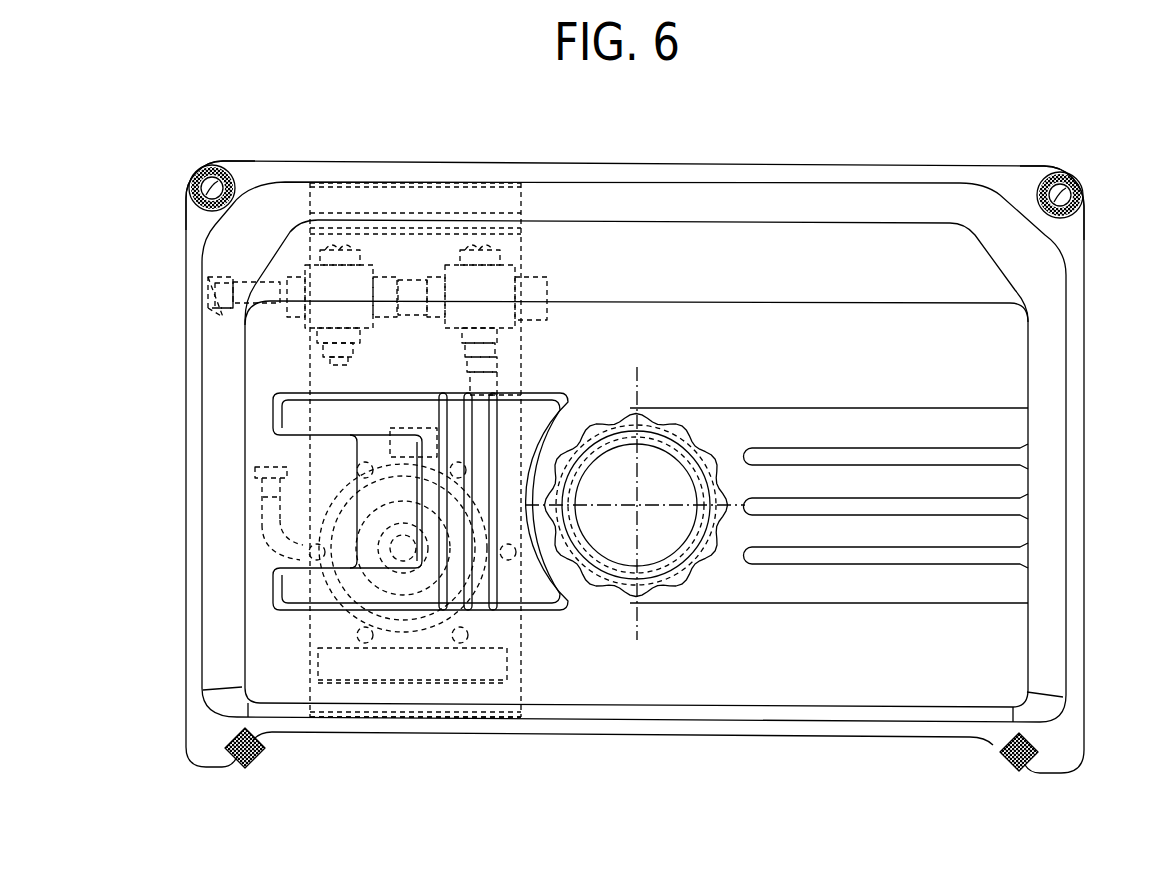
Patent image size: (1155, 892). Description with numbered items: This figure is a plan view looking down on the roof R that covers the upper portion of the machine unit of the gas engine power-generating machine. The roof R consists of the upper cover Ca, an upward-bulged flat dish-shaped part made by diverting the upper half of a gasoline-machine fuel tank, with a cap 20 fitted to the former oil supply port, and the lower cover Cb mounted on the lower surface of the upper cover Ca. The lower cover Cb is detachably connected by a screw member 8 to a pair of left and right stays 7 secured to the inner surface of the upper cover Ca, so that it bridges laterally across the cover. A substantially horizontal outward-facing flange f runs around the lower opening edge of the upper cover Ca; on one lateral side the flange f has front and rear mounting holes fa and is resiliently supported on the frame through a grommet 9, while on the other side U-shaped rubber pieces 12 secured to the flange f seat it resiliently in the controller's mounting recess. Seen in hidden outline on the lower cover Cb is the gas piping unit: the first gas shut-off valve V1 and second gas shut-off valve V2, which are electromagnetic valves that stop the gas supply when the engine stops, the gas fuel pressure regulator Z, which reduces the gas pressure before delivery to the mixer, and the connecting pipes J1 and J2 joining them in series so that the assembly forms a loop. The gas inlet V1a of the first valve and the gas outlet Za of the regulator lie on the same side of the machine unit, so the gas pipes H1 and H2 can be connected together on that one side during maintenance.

The flange f is at (633, 163).
The mounting holes fa is at (200, 165).
The grommet 9 is at (200, 197).
The rubber pieces 12 is at (247, 760).
The roof R is at (738, 250).
The upper cover Ca is at (846, 381).
The lower cover Cb is at (523, 650).
The cap 20 is at (658, 588).
The gas fuel pressure regulator Z is at (335, 612).
The gas outlet Za is at (257, 537).
The gas pipe H1 is at (228, 320).
The gas pipe H2 is at (255, 470).
The first gas shut-off valve V1 is at (340, 250).
The gas inlet V1a is at (212, 323).
The second gas shut-off valve V2 is at (475, 252).
The connecting pipe J1 is at (412, 235).
The connecting pipe J2 is at (500, 380).
The stays 7 is at (165, 253).
The screw member 8 is at (337, 100).